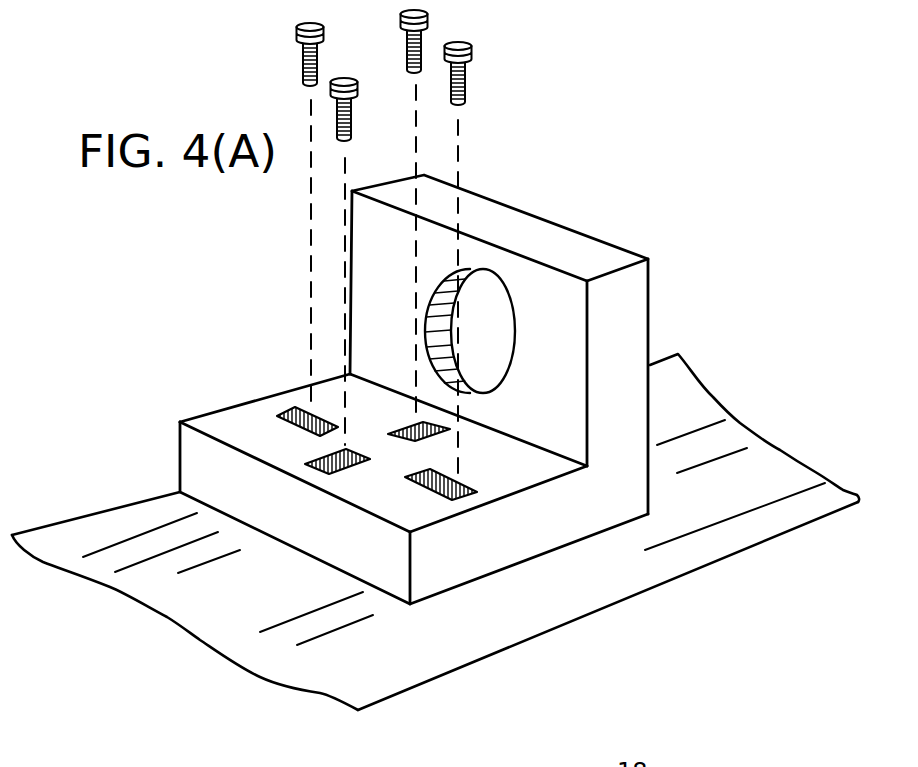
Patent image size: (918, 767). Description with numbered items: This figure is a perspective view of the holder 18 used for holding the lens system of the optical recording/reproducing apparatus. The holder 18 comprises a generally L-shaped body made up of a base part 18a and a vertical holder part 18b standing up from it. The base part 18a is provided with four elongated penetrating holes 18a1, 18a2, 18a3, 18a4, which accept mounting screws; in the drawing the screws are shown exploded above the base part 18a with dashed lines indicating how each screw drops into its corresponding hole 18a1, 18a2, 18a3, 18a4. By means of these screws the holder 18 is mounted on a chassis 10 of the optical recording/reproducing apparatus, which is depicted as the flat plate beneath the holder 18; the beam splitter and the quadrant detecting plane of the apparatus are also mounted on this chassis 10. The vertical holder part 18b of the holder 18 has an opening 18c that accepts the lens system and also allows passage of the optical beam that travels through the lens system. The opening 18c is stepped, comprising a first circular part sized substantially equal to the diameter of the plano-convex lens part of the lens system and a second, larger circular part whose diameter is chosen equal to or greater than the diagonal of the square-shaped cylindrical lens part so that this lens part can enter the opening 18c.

The chassis 10 is at (222, 623).
The holder 18 is at (465, 369).
The base part 18a is at (410, 468).
The elongated penetrating hole 18a1 is at (290, 412).
The elongated penetrating hole 18a2 is at (317, 458).
The elongated penetrating hole 18a3 is at (462, 488).
The elongated penetrating hole 18a4 is at (418, 422).
The vertical holder part 18b is at (630, 298).
The opening 18c is at (495, 300).